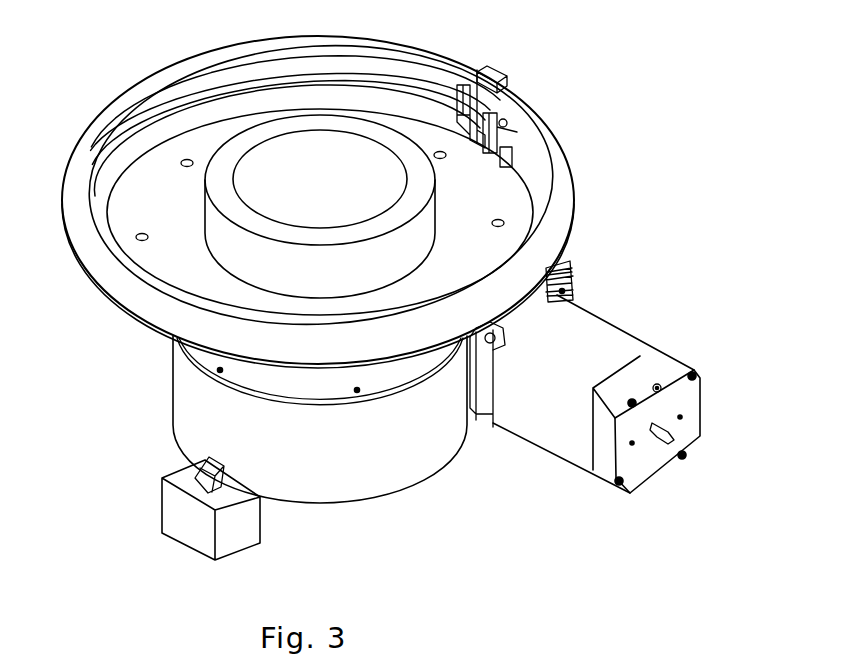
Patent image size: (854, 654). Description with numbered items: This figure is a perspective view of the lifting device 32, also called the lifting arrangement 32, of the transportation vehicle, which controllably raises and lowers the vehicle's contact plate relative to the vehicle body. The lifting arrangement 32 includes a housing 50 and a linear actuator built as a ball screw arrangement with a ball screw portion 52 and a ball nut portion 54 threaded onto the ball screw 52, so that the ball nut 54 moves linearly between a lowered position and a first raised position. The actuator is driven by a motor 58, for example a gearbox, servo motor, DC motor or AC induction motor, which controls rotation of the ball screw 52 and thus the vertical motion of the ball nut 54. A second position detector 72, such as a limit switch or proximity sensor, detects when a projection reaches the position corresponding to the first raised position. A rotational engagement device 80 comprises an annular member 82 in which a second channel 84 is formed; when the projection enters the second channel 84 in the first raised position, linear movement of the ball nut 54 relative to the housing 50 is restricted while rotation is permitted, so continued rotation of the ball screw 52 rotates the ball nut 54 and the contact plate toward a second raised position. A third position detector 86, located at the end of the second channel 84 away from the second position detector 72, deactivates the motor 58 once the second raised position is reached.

The lifting device 32 is at (676, 141).
The housing 50 is at (367, 478).
The ball screw portion 52 is at (413, 243).
The ball nut portion 54 is at (153, 268).
The motor 58 is at (612, 340).
The second position detector 72 is at (500, 72).
The rotational engagement device 80 is at (171, 555).
The annular member 82 is at (543, 133).
The second channel 84 is at (190, 85).
The third position detector 86 is at (470, 70).